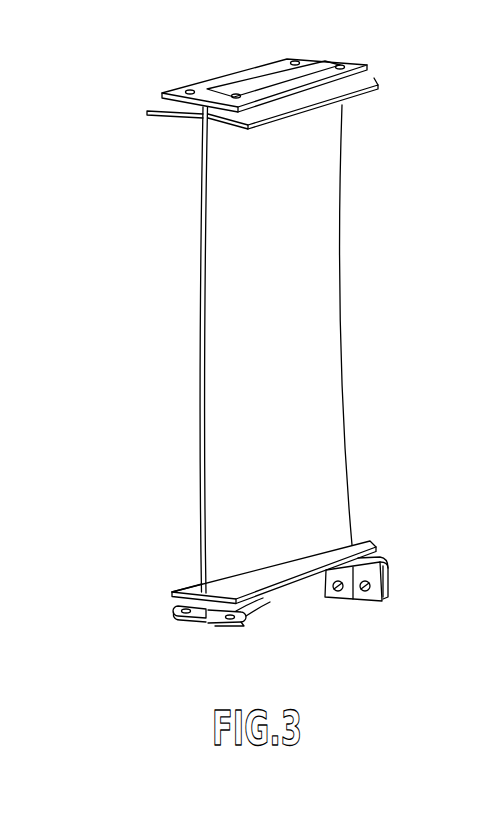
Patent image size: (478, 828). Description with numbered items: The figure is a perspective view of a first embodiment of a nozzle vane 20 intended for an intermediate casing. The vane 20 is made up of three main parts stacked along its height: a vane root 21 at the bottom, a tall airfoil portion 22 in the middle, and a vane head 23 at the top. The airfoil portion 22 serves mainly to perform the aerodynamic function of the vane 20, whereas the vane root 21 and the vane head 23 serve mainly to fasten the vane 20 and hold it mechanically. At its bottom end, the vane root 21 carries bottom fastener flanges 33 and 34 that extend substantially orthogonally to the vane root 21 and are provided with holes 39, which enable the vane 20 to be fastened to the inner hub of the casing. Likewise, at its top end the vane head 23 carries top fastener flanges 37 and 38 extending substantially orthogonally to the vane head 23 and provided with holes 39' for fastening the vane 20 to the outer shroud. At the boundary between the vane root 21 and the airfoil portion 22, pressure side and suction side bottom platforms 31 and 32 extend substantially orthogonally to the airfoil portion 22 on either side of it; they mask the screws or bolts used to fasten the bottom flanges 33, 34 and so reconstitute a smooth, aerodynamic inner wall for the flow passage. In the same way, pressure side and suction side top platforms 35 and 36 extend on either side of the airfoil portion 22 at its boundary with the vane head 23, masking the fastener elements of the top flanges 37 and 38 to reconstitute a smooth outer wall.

The nozzle vane 20 is at (389, 142).
The vane root 21 is at (203, 616).
The airfoil portion 22 is at (312, 402).
The vane head 23 is at (190, 116).
The pressure side bottom platform 31 is at (355, 543).
The suction side bottom platform 32 is at (195, 585).
The bottom fastener flange 33 is at (247, 619).
The bottom fastener flange 34 is at (175, 611).
The pressure side top platform 35 is at (358, 88).
The suction side top platform 36 is at (162, 110).
The top fastener flange 37 is at (323, 70).
The top fastener flange 38 is at (229, 84).
The holes 39 is at (276, 631).
The holes 39' is at (259, 55).